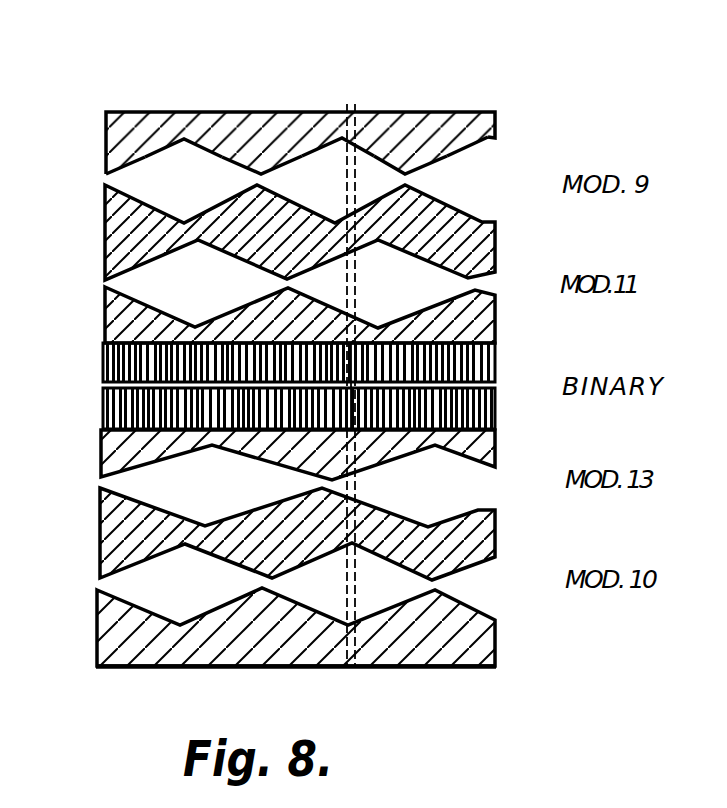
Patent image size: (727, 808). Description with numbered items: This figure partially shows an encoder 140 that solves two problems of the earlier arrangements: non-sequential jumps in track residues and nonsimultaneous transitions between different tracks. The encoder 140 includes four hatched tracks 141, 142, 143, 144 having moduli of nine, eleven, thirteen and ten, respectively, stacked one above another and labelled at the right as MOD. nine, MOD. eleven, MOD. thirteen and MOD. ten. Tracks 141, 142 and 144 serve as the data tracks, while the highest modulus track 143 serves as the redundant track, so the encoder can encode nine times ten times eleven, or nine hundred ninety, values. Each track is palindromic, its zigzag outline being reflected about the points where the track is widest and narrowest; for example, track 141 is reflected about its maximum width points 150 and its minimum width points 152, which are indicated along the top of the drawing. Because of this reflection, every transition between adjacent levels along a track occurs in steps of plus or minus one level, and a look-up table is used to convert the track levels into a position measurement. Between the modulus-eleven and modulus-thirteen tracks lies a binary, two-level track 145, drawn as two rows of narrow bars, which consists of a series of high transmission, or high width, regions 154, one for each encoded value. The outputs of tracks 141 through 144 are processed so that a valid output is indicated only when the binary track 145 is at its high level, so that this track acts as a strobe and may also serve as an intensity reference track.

The encoder 140 is at (119, 101).
The track 141 is at (97, 177).
The track 142 is at (97, 280).
The track 143 is at (95, 482).
The track 144 is at (93, 583).
The binary track 145 is at (97, 381).
The maximum width points 150 is at (185, 138).
The minimum width points 152 is at (260, 171).
The high transmission regions 154 is at (103, 347).